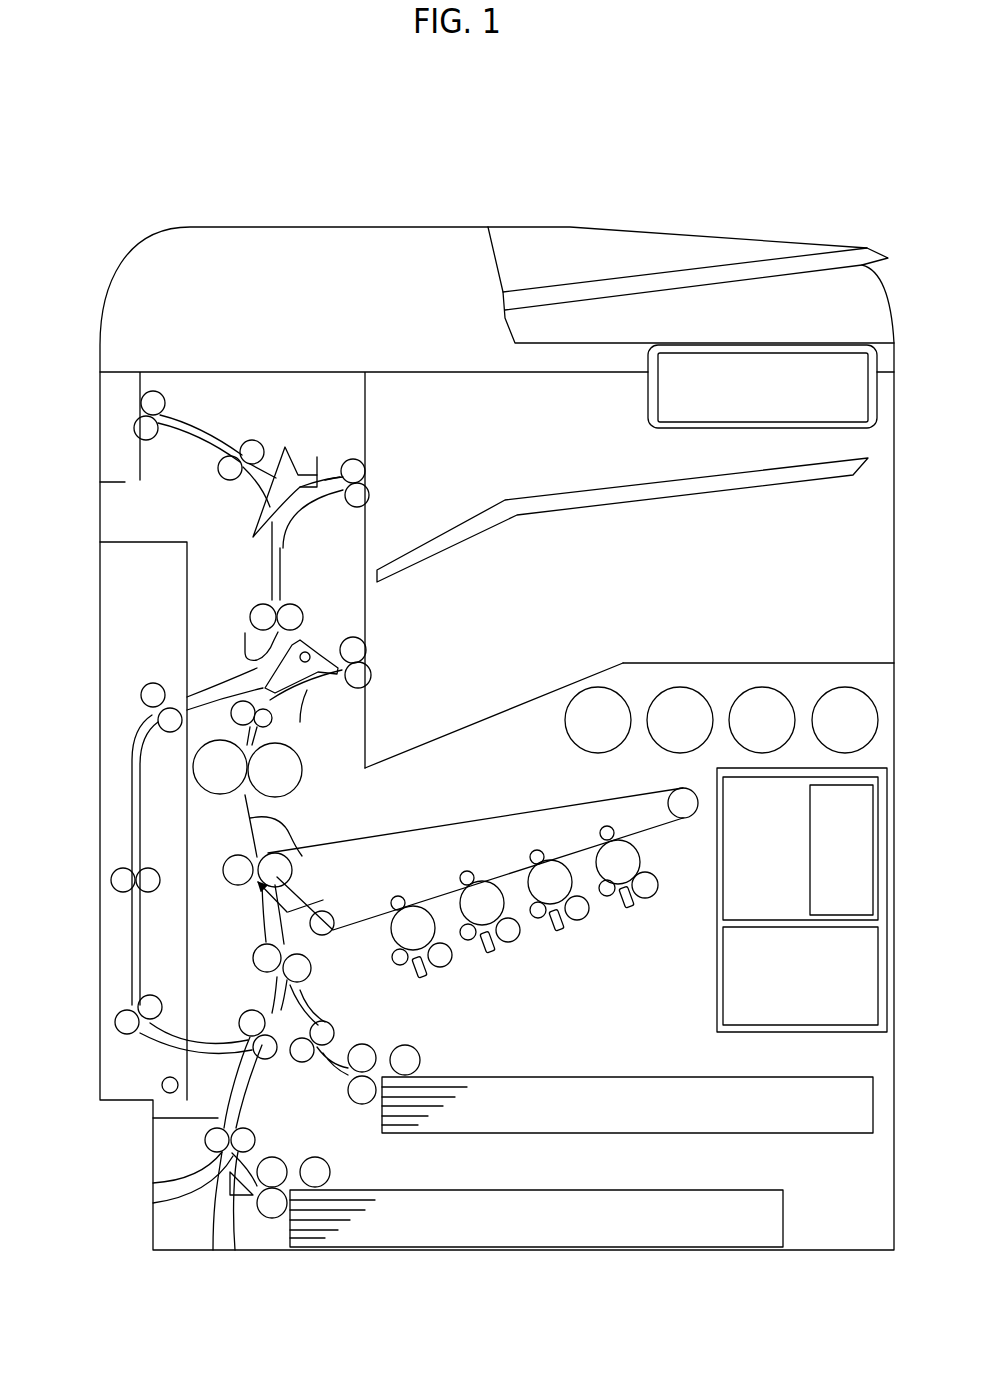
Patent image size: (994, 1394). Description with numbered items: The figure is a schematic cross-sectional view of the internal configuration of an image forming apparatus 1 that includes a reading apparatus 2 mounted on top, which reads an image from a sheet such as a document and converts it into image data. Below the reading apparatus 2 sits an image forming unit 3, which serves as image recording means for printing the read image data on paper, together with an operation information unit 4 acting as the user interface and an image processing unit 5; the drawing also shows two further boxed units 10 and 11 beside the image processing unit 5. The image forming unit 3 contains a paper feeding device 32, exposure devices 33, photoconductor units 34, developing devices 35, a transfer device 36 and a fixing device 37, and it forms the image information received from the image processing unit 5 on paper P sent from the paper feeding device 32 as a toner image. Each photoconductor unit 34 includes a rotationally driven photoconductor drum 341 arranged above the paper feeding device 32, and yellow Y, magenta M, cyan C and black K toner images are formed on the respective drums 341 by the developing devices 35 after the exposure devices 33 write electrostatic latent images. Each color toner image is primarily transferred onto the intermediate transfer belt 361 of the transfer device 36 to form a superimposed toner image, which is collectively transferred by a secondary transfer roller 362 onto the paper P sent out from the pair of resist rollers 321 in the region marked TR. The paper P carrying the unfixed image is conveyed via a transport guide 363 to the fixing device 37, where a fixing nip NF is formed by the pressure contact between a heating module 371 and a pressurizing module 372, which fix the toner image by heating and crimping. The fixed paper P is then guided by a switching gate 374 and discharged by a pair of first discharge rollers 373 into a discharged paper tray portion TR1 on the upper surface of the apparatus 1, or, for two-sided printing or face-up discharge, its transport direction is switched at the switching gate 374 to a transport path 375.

The image forming apparatus 1 is at (116, 225).
The reading apparatus 2 is at (324, 315).
The image forming unit 3 is at (572, 1003).
The operation information unit 4 is at (769, 401).
The image processing unit 5 is at (815, 995).
The power supply unit 10 is at (772, 817).
The storage unit 11 is at (857, 865).
The paper feeding device 32 is at (424, 1040).
The pair of resist rollers 321 is at (297, 985).
The exposure device 33 is at (631, 906).
The photoconductor unit 34 is at (592, 863).
The photoconductor drum 341 is at (620, 860).
The developing device 35 is at (657, 897).
The transfer device 36 is at (392, 818).
The intermediate transfer belt 361 is at (460, 822).
The secondary transfer roller 362 is at (242, 876).
The transport guide 363 is at (289, 858).
The fixing device 37 is at (318, 735).
The heating module 371 is at (288, 797).
The pressurizing module 372 is at (222, 795).
The pair of first discharge rollers 373 is at (372, 668).
The switching gate 374 is at (312, 665).
The transport path 375 is at (263, 577).
The secondary transfer region TR is at (288, 893).
The discharged paper tray portion TR1 is at (550, 672).
The fixing nip NF is at (246, 746).
The paper P is at (513, 1143).
The black K is at (598, 720).
The cyan C is at (680, 720).
The magenta M is at (762, 720).
The yellow Y is at (845, 720).